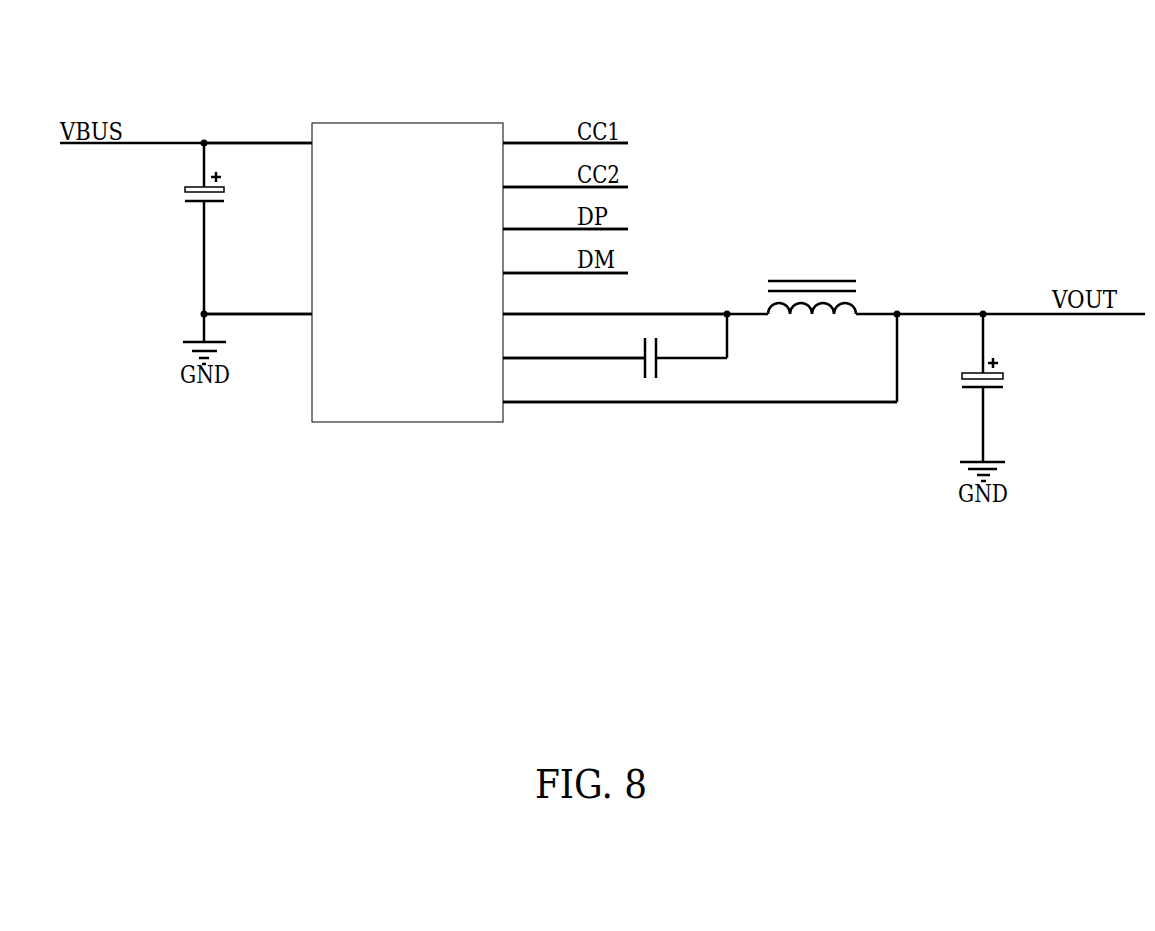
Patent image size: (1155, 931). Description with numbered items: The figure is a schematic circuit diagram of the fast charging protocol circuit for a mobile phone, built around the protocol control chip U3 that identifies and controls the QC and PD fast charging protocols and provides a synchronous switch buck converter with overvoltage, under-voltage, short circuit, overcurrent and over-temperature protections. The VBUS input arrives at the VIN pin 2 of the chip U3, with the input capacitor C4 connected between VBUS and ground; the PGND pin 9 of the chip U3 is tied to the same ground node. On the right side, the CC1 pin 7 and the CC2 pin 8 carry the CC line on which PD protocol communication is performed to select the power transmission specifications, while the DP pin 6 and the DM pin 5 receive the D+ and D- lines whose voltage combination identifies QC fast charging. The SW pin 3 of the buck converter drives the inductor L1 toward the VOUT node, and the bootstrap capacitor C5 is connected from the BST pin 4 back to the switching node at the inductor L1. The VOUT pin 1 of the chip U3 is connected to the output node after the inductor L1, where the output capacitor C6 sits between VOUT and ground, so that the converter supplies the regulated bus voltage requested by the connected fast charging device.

The XPM5220 power management IC U3 is at (405, 275).
The input capacitor 100uF/35V C4 is at (148, 228).
The bootstrap capacitor 104/25V C5 is at (675, 357).
The output capacitor 220uF/25V C6 is at (1044, 388).
The inductor 22uH L1 is at (816, 314).
The VOUT pin 1 is at (700, 389).
The VIN pin 2 is at (258, 131).
The SW pin 3 is at (615, 302).
The BST pin 4 is at (574, 345).
The DM pin 5 is at (565, 260).
The DP pin 6 is at (565, 217).
The CC1 pin 7 is at (565, 132).
The CC2 pin 8 is at (565, 175).
The PGND pin 9 is at (258, 302).